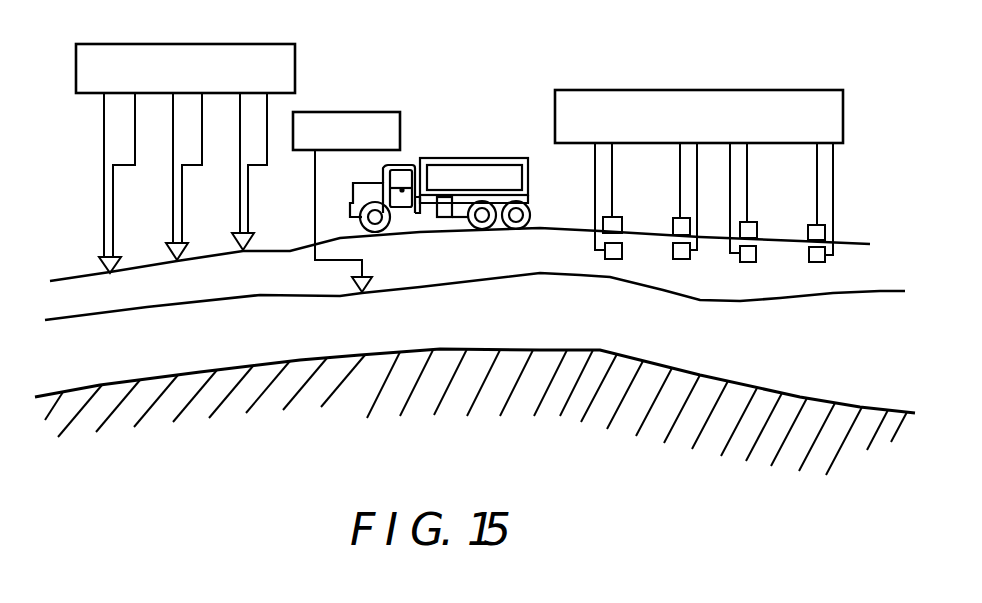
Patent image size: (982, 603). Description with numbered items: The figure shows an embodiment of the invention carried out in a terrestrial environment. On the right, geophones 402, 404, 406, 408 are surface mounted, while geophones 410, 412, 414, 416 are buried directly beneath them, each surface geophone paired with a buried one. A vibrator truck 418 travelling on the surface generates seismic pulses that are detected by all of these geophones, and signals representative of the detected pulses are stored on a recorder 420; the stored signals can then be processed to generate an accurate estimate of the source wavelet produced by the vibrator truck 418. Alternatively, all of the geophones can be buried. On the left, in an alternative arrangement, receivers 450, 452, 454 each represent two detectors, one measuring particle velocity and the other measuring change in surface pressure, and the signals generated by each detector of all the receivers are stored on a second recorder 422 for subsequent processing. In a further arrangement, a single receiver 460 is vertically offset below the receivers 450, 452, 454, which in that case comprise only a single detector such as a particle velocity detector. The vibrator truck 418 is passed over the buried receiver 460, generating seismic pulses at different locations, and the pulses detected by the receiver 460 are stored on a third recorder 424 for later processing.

The geophone 402 is at (622, 226).
The geophone 404 is at (673, 231).
The geophone 406 is at (757, 229).
The geophone 408 is at (808, 232).
The geophone 410 is at (612, 259).
The geophone 412 is at (686, 259).
The geophone 414 is at (750, 262).
The geophone 416 is at (822, 262).
The vibrator truck 418 is at (490, 157).
The recorder 420 is at (760, 89).
The recorder 422 is at (295, 63).
The recorder 424 is at (352, 111).
The receiver 450 is at (100, 266).
The receiver 452 is at (167, 251).
The receiver 454 is at (232, 246).
The single receiver 460 is at (370, 292).